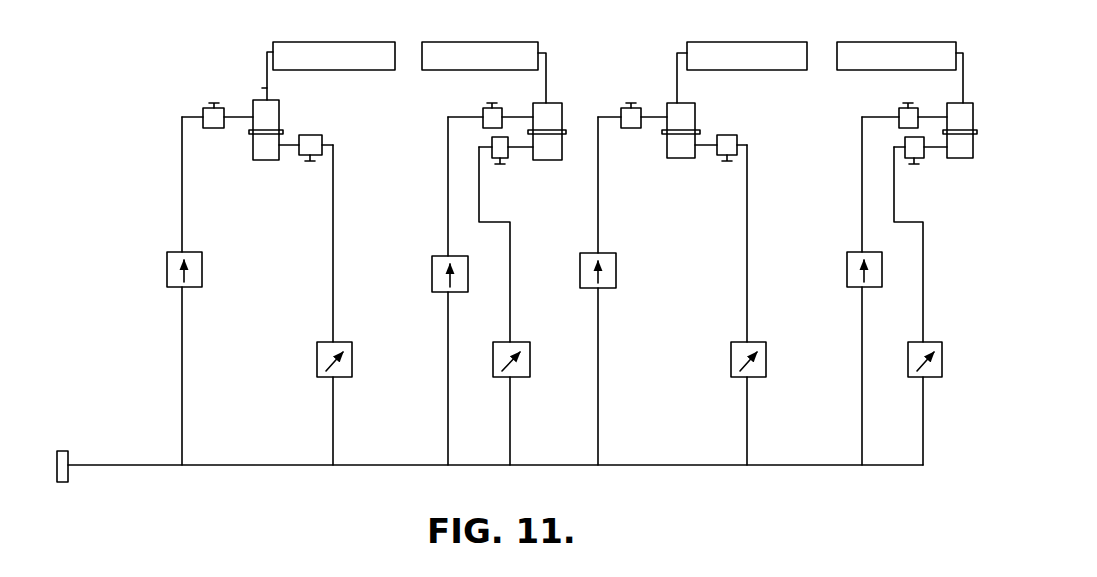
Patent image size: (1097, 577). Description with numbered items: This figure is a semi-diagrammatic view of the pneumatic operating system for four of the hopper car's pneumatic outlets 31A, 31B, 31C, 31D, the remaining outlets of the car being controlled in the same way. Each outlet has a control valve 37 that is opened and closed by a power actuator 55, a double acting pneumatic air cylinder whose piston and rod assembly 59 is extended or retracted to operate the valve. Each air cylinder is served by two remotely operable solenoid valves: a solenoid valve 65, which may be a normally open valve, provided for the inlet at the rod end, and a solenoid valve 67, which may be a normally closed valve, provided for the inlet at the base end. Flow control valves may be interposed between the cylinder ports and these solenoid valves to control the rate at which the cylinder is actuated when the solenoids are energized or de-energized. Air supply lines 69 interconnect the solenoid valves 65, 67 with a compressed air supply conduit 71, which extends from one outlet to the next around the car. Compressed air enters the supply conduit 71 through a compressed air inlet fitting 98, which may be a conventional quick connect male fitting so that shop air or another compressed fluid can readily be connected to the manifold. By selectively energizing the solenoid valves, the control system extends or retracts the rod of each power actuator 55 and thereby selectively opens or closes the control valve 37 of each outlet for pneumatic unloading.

The pneumatic outlet 31A is at (336, 36).
The pneumatic outlet 31B is at (492, 36).
The pneumatic outlet 31C is at (754, 36).
The pneumatic outlet 31D is at (909, 36).
The control valve 37 is at (262, 46).
The power actuator 55 is at (283, 116).
The piston and rod assembly 59 is at (262, 88).
The solenoid valve 65 is at (204, 270).
The solenoid valve 67 is at (353, 362).
The air supply lines 69 is at (184, 218).
The compressed air supply conduit 71 is at (312, 467).
The compressed air inlet fitting 98 is at (65, 450).